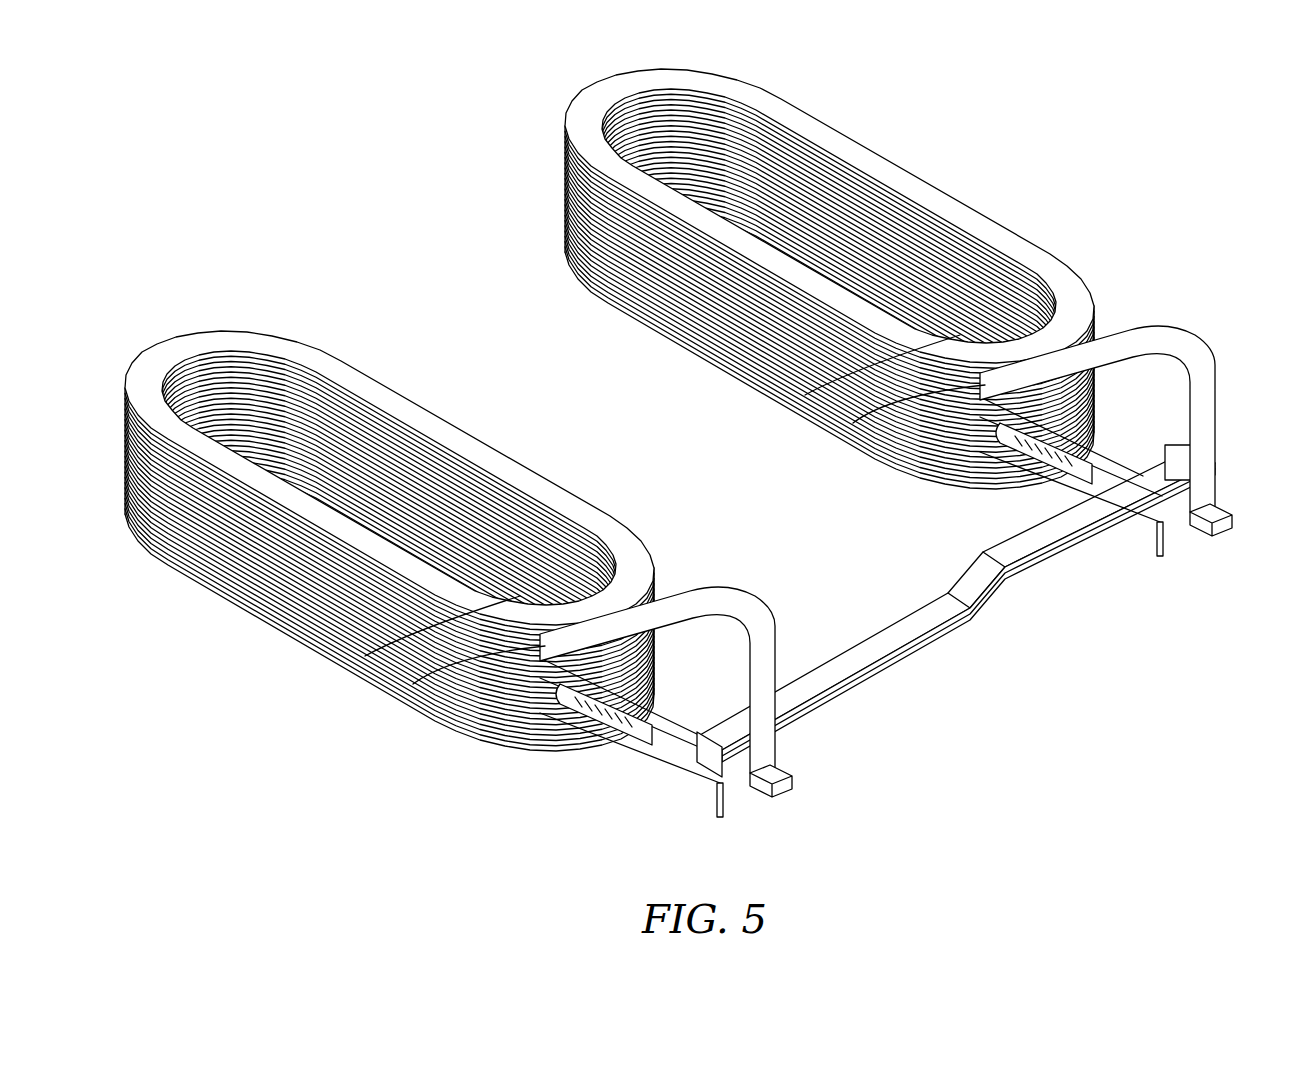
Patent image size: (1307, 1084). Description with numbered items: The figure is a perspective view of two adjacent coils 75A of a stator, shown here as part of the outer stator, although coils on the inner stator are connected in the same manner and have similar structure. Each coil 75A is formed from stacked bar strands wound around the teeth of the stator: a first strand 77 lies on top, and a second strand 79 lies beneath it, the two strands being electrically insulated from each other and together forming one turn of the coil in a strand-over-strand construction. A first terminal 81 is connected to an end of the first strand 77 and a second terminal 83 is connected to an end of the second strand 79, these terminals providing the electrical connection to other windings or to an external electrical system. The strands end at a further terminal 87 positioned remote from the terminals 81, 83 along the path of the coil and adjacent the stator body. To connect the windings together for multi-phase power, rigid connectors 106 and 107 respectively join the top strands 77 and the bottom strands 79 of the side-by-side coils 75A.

The outer coil 75A is at (948, 140).
The first strand 77 is at (805, 395).
The second strand 79 is at (853, 423).
The first terminal 81 is at (1205, 480).
The second terminal 83 is at (1162, 540).
The terminal 87 is at (1235, 518).
The rigid connector 106 is at (920, 607).
The rigid connector 107 is at (940, 655).